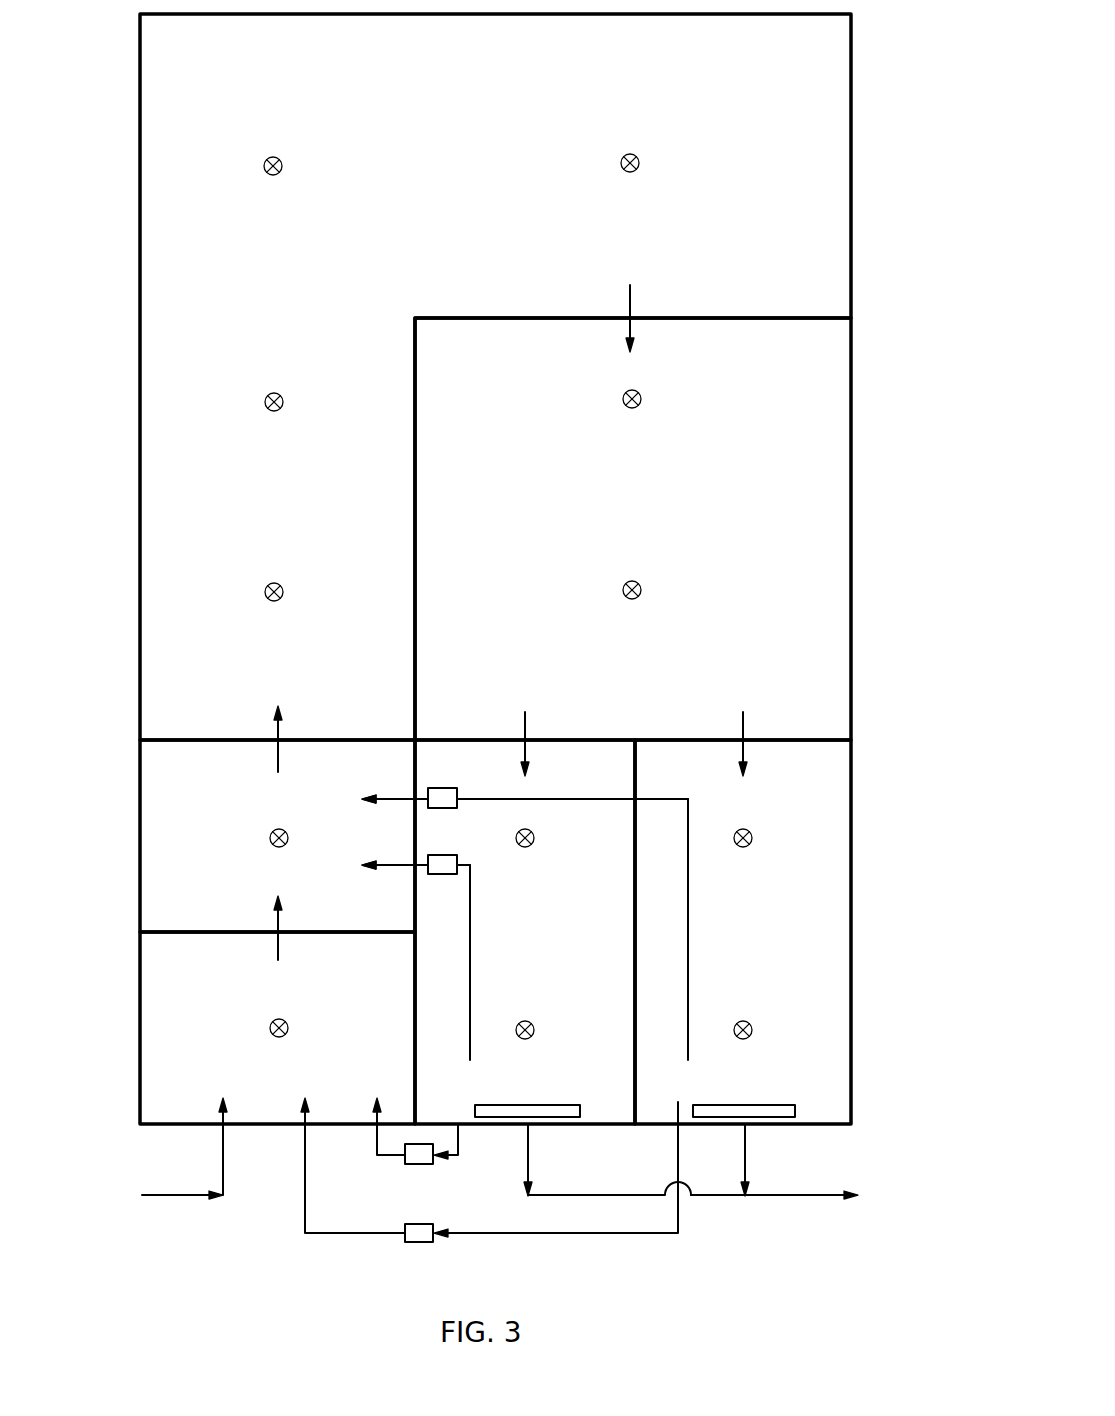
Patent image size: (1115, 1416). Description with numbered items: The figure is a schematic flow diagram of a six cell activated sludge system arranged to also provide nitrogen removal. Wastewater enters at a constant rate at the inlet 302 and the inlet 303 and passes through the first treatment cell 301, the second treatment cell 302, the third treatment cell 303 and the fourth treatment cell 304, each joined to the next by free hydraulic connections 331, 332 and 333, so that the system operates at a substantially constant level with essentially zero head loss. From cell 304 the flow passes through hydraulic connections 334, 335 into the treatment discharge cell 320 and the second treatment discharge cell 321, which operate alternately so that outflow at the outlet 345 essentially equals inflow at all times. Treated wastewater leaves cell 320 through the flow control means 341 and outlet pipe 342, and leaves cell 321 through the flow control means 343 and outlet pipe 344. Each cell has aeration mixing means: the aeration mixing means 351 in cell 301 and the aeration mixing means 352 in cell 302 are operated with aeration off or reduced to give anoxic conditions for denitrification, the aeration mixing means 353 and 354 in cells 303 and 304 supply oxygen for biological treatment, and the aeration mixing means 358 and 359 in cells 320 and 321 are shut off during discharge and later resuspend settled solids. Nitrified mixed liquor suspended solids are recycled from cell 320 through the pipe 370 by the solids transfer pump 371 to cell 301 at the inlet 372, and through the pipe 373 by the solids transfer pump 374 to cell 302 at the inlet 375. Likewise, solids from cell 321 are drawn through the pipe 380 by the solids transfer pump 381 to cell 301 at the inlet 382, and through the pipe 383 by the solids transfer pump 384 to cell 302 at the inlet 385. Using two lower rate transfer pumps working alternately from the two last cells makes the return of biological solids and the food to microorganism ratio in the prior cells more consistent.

The first treatment cell 301 is at (200, 1108).
The second treatment cell / inlet 302 is at (208, 918).
The inlet / third treatment cell 303 is at (208, 734).
The fourth treatment cell 304 is at (830, 733).
The treatment discharge cell 320 is at (630, 1098).
The second treatment discharge cell 321 is at (838, 1098).
The hydraulic connection 331 is at (276, 940).
The hydraulic connection 332 is at (276, 748).
The hydraulic connection 333 is at (628, 330).
The hydraulic connection 334 is at (528, 748).
The hydraulic connection 335 is at (746, 748).
The flow control means 341 is at (573, 1126).
The outlet pipe 342 is at (530, 1167).
The flow control means 343 is at (793, 1126).
The outlet pipe 344 is at (748, 1167).
The outlet 345 is at (800, 1200).
The aeration mixing means 351 is at (276, 1037).
The aeration mixing means 352 is at (276, 847).
The aeration mixing means 353 is at (270, 175).
The aeration mixing means 354 is at (629, 408).
The aeration mixing means 358 is at (522, 847).
The aeration mixing means 359 is at (740, 847).
The solids transfer pipe 370 is at (459, 1130).
The solids transfer pump 371 is at (408, 1166).
The solids transfer inlet 372 is at (376, 1128).
The solids transfer pipe 373 is at (470, 1060).
The solids transfer pump 374 is at (435, 855).
The solids transfer inlet 375 is at (412, 866).
The solids transfer pipe 380 is at (680, 1130).
The solids transfer pump 381 is at (408, 1244).
The solids transfer inlet 382 is at (305, 1128).
The solids transfer pipe 383 is at (688, 1060).
The solids transfer pump 384 is at (435, 788).
The solids transfer inlet 385 is at (412, 800).